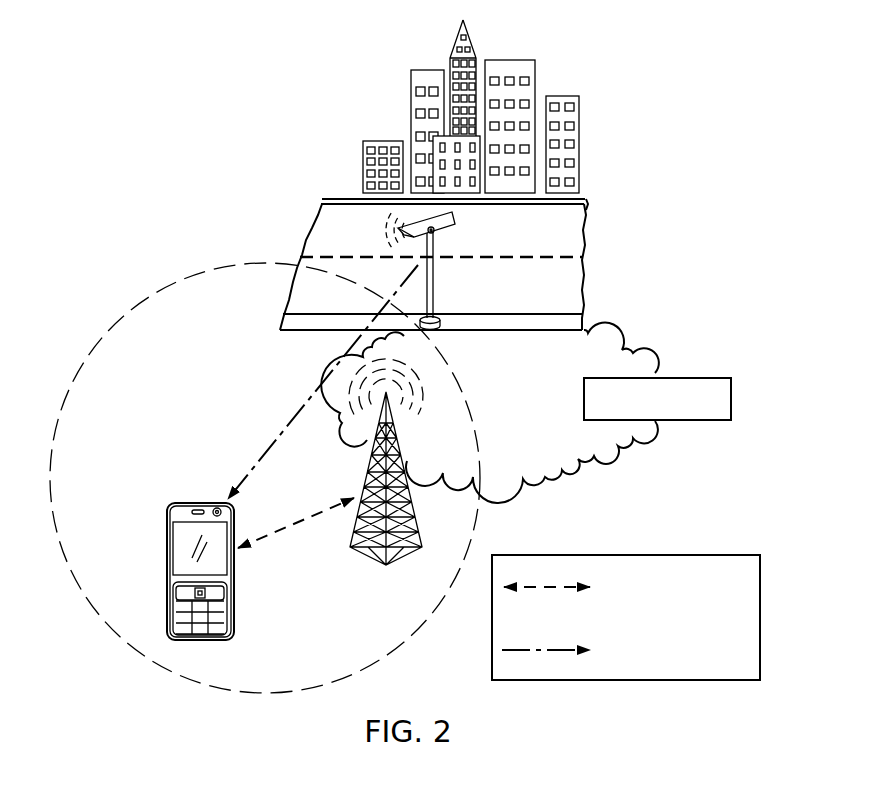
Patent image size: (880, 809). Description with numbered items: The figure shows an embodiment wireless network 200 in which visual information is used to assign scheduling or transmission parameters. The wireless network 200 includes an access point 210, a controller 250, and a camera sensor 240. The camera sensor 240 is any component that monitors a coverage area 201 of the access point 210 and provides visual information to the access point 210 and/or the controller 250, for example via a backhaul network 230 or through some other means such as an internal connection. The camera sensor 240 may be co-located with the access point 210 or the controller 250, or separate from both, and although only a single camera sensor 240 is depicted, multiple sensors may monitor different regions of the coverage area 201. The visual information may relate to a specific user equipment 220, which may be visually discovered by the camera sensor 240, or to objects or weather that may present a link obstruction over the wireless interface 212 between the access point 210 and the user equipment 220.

The wireless network 200 is at (678, 200).
The coverage area 201 is at (162, 292).
The access point 210 is at (407, 558).
The wireless interface 212 is at (297, 522).
The user equipment 220 is at (168, 572).
The backhaul network 230 is at (490, 412).
The camera sensor 240 is at (350, 138).
The controller 250 is at (667, 423).